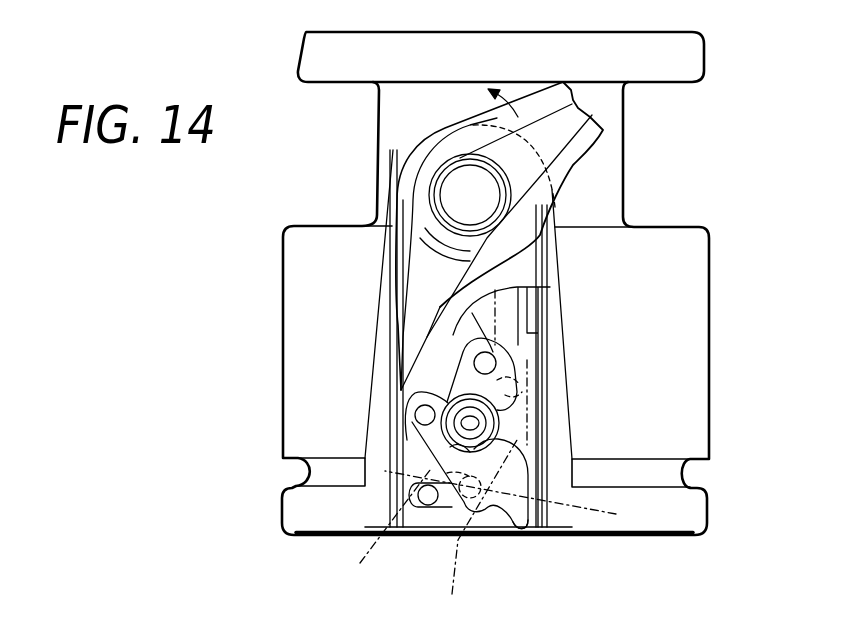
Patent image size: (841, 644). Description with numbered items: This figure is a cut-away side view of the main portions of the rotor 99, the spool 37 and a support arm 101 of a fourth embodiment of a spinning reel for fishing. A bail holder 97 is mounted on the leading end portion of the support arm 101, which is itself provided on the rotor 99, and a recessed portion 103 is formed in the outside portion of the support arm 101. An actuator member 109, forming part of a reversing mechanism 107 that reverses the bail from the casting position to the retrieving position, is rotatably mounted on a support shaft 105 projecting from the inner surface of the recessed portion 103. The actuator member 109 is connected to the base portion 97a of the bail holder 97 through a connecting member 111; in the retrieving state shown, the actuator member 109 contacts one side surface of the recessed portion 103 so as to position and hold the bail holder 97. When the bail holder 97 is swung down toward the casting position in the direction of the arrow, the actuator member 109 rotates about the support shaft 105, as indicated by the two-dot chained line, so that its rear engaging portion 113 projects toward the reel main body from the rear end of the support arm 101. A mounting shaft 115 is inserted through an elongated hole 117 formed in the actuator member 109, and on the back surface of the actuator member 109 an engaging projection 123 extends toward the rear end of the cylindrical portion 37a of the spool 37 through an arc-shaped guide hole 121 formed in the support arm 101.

The spool 37 is at (712, 225).
The cylindrical portion 37a is at (711, 372).
The bail holder 97 is at (530, 102).
The base portion 97a is at (418, 168).
The rotor 99 is at (683, 474).
The support arm 101 is at (383, 297).
The recessed portion 103 is at (512, 305).
The support shaft 105 is at (415, 415).
The reversing mechanism 107 is at (513, 367).
The actuator member 109 is at (513, 516).
The connecting member 111 is at (462, 334).
The engaging portion 113 is at (580, 562).
The mounting shaft 115 is at (487, 423).
The elongated hole 117 is at (507, 400).
The arc-shaped guide hole 121 is at (453, 498).
The engaging projection 123 is at (489, 530).